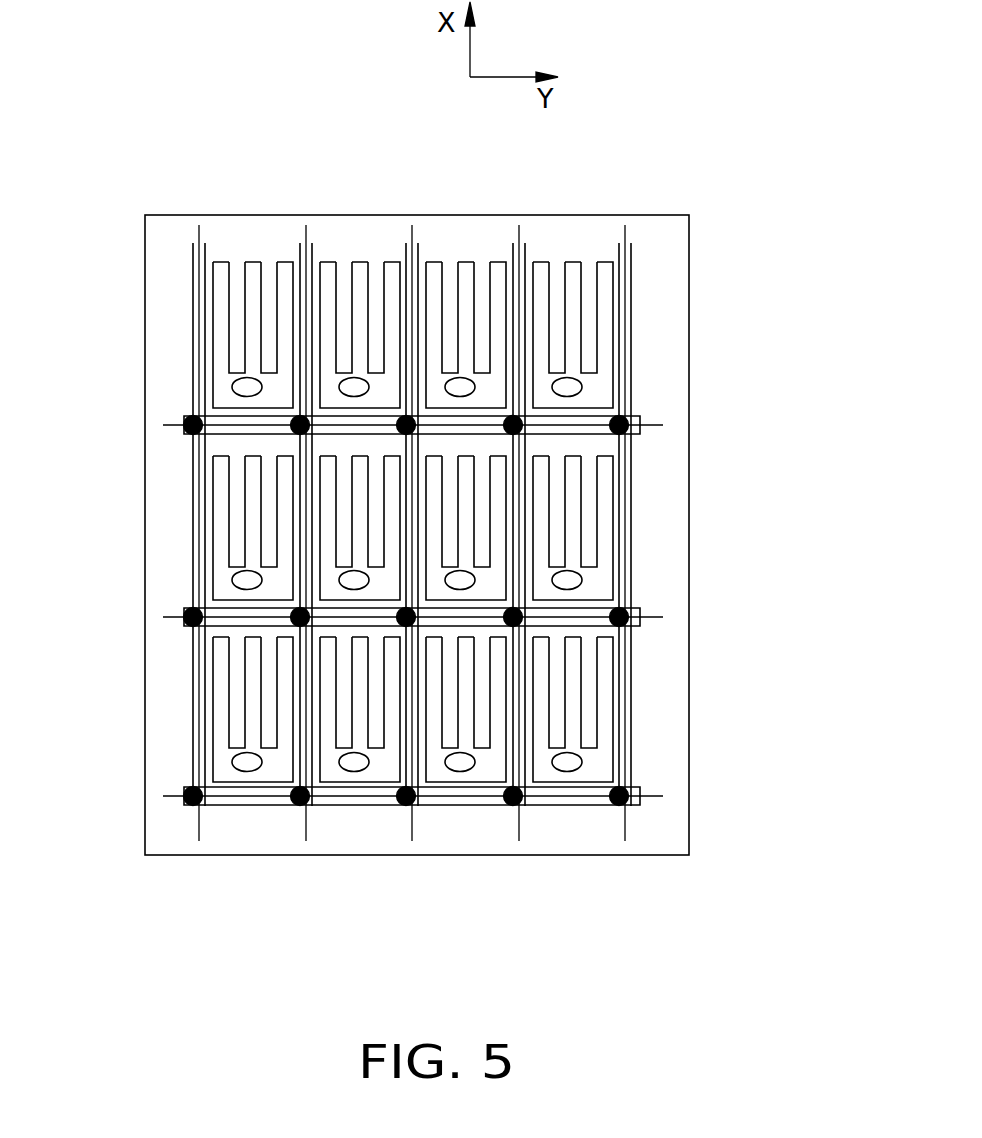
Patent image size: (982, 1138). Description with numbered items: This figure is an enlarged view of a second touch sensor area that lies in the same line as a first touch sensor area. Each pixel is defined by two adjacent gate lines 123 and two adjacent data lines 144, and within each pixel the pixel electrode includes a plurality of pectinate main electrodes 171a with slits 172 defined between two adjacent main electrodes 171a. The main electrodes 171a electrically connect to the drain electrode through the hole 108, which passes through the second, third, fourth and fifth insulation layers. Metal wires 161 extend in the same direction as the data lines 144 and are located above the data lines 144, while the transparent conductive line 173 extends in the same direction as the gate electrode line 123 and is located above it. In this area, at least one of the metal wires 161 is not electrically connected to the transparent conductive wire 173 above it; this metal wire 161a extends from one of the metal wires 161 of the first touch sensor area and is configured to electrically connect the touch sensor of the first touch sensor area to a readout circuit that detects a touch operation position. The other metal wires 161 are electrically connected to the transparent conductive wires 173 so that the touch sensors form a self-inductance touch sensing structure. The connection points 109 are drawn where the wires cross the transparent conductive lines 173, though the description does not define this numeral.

The hole 108 is at (567, 580).
The contact 109 is at (187, 610).
The gate line 123 is at (177, 793).
The data line 144 is at (198, 822).
The metal wire 161 is at (194, 460).
The metal wire 161a is at (300, 775).
The main electrode 171a is at (600, 268).
The slit 172 is at (587, 268).
The transparent conductive line 173 is at (582, 800).